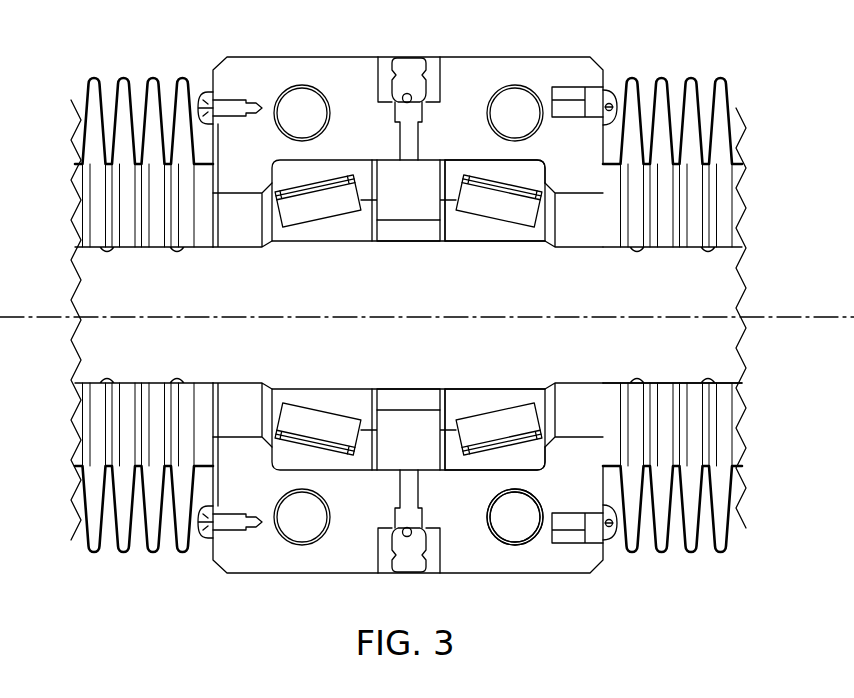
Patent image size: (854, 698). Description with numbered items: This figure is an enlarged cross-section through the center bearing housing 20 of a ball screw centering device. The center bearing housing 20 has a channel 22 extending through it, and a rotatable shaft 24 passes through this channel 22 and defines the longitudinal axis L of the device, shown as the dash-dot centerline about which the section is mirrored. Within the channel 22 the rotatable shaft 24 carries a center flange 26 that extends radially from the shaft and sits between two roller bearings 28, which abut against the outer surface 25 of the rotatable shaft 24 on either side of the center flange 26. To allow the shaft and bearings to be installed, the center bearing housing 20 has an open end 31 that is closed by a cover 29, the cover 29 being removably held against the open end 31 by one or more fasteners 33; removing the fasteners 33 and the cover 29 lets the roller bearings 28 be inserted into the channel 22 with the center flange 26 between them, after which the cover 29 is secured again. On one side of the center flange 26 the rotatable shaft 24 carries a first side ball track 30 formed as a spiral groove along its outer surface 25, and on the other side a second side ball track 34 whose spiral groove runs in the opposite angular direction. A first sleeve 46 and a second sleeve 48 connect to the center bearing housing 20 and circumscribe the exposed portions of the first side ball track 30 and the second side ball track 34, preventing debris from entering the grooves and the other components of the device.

The center bearing housing 20 is at (447, 62).
The channel 22 is at (388, 174).
The rotatable shaft 24 is at (720, 291).
The outer surface 25 is at (518, 230).
The center flange 26 is at (398, 212).
The roller bearing 28 is at (318, 315).
The cover 29 is at (592, 502).
The first side ball track 30 is at (633, 388).
The open end 31 is at (553, 497).
The fastener 33 is at (586, 106).
The second side ball track 34 is at (122, 365).
The first sleeve 46 is at (737, 176).
The second sleeve 48 is at (76, 178).
The longitudinal axis L is at (810, 318).